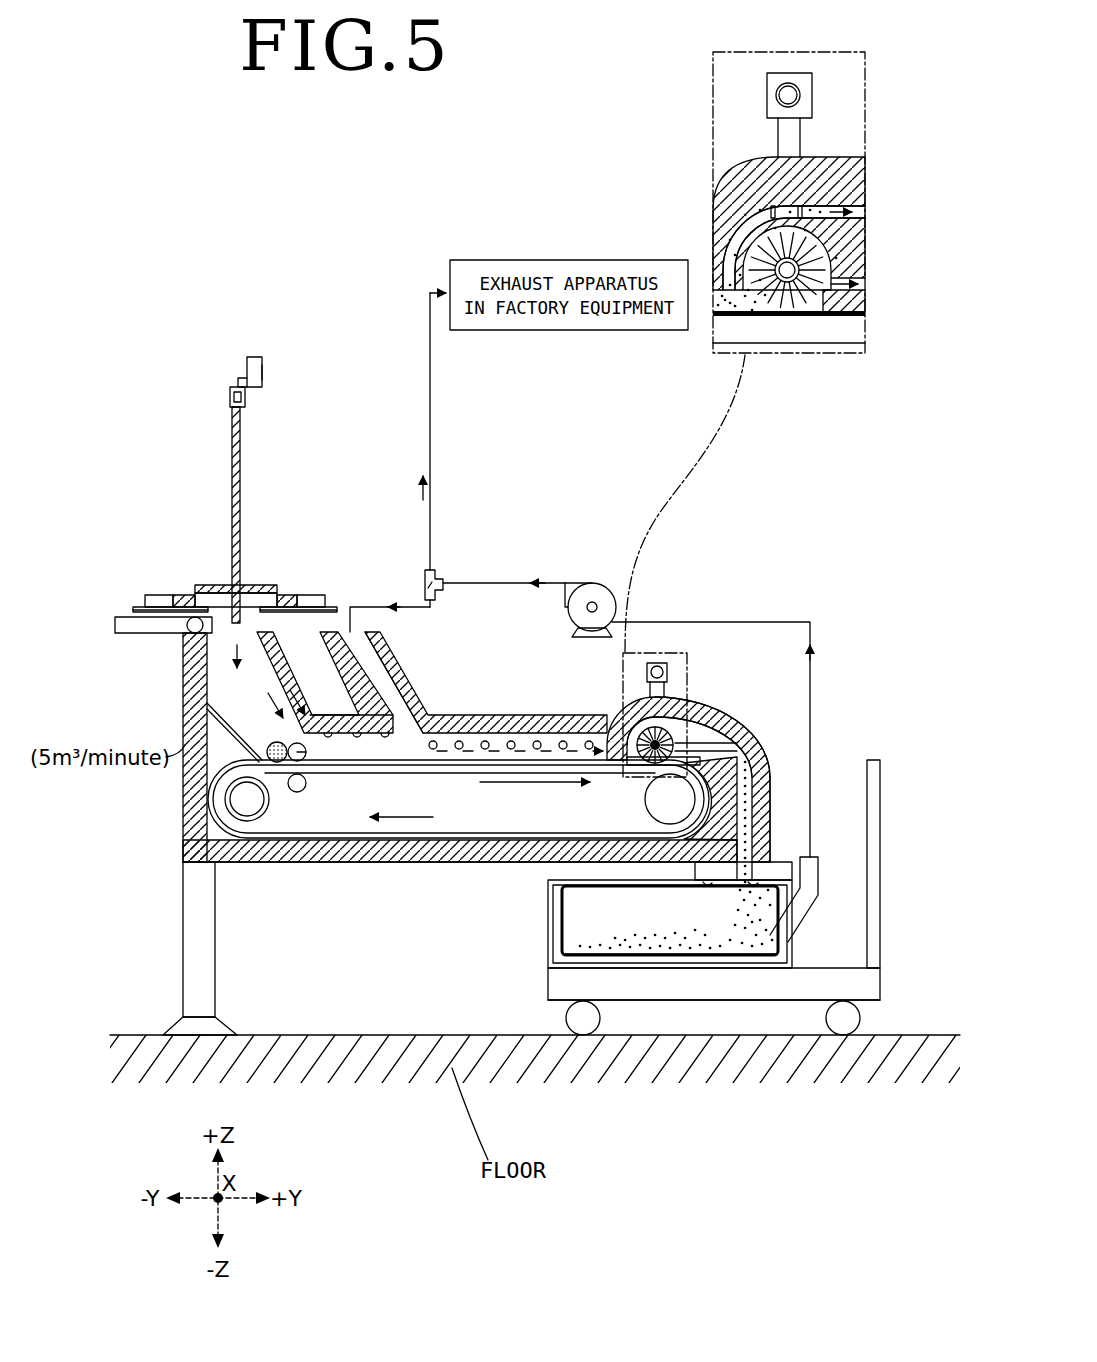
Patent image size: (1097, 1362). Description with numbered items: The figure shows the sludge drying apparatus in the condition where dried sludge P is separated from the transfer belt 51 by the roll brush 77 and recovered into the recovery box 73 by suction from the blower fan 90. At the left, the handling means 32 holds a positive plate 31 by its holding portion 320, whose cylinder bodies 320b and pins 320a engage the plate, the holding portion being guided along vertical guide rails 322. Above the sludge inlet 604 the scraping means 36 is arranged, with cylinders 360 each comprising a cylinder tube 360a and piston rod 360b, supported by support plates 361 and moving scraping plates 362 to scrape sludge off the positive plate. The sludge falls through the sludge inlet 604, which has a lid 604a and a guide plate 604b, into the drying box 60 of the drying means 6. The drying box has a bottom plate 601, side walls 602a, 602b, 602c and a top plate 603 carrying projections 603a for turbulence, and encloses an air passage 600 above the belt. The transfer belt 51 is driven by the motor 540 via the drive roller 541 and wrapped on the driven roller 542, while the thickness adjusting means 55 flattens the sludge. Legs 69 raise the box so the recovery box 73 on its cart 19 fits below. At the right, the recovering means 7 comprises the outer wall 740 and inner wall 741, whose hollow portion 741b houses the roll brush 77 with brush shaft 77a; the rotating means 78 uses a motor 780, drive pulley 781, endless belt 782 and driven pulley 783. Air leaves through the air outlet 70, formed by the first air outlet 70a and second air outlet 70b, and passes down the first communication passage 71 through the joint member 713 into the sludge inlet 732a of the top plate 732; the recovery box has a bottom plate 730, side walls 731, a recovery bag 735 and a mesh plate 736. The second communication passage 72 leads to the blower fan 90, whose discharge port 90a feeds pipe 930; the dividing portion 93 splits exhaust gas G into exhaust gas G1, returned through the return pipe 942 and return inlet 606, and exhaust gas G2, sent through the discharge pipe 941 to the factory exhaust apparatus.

The drying means 6 is at (330, 872).
The recovering means 7 is at (790, 745).
The cart 19 is at (886, 1003).
The positive plate 31 is at (232, 445).
The handling means 32 is at (295, 360).
The scraping means 36 is at (143, 590).
The transfer belt 51 is at (500, 742).
The thickness adjusting means 55 is at (307, 782).
The drying box 60 is at (392, 776).
The legs 69 is at (190, 912).
The air outlet 70 is at (830, 300).
The first air outlet 70a is at (615, 728).
The second air outlet 70b is at (740, 800).
The first communication passage 71 is at (772, 782).
The second communication passage 72 is at (874, 758).
The recovery box 73 is at (533, 931).
The roll brush 77 is at (700, 742).
The brush shaft 77a is at (845, 303).
The rotating means 78 is at (660, 655).
The blower fan 90 is at (600, 583).
The discharge port 90a is at (572, 583).
The dividing portion 93 is at (434, 570).
The holding portion 320 is at (247, 395).
The pin 320a is at (252, 358).
The cylinder body 320b is at (239, 382).
The vertical guide rails 322 is at (262, 365).
The cylinder 360 is at (300, 610).
The cylinder tube 360a is at (158, 598).
The piston rod 360b is at (184, 598).
The support plate 361 is at (152, 622).
The scraping plate 362 is at (210, 588).
The motor 540 is at (196, 846).
The drive roller 541 is at (238, 806).
The driven roller 542 is at (666, 806).
The air passage 600 is at (395, 730).
The bottom plate 601 is at (345, 858).
The side walls 602a is at (520, 718).
The side wall 602b is at (188, 795).
The side wall 602c is at (770, 748).
The top plate 603 is at (470, 716).
The projections 603a is at (380, 768).
The sludge inlet 604 is at (247, 640).
The lid 604a is at (160, 635).
The guide plate 604b is at (225, 722).
The return inlet 606 is at (380, 645).
The joint member 713 is at (703, 888).
The bottom plate 730 is at (700, 985).
The side walls 731 is at (550, 955).
The top plate 732 is at (560, 882).
The sludge inlet 732a is at (775, 866).
The recovery bag 735 is at (760, 955).
The mesh plate 736 is at (650, 978).
The outer wall 740 is at (770, 700).
The inner wall 741 is at (750, 700).
The hollow portion 741b is at (690, 705).
The motor 780 is at (812, 75).
The drive pulley 781 is at (800, 95).
The endless belt 782 is at (800, 135).
The driven pulley 783 is at (830, 330).
The pipe 930 is at (505, 583).
The discharge pipe 941 is at (432, 340).
The return pipe 942 is at (415, 608).
The exhaust gas G is at (530, 583).
The exhaust gas G1 is at (400, 607).
The exhaust gas G2 is at (432, 485).
The sludge P is at (286, 745).